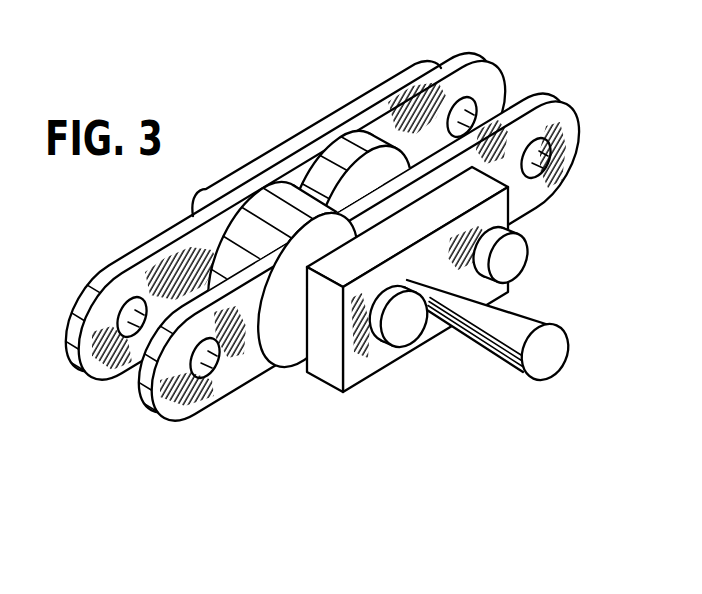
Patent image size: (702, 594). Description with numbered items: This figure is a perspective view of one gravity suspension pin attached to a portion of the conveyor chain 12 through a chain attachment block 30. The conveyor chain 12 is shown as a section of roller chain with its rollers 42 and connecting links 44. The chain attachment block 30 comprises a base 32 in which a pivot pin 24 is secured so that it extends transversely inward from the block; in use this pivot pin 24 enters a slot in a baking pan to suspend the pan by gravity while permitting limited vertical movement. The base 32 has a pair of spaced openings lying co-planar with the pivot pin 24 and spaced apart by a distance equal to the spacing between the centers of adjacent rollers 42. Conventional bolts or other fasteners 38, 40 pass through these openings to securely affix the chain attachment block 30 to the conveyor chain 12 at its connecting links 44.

The conveyor chain 12 is at (86, 278).
The connecting links 44 is at (363, 90).
The rollers 42 is at (363, 147).
The chain attachment block 30 is at (391, 313).
The base 32 is at (353, 380).
The pivot pin 24 is at (557, 337).
The fastener 38 is at (520, 260).
The fastener 40 is at (412, 338).